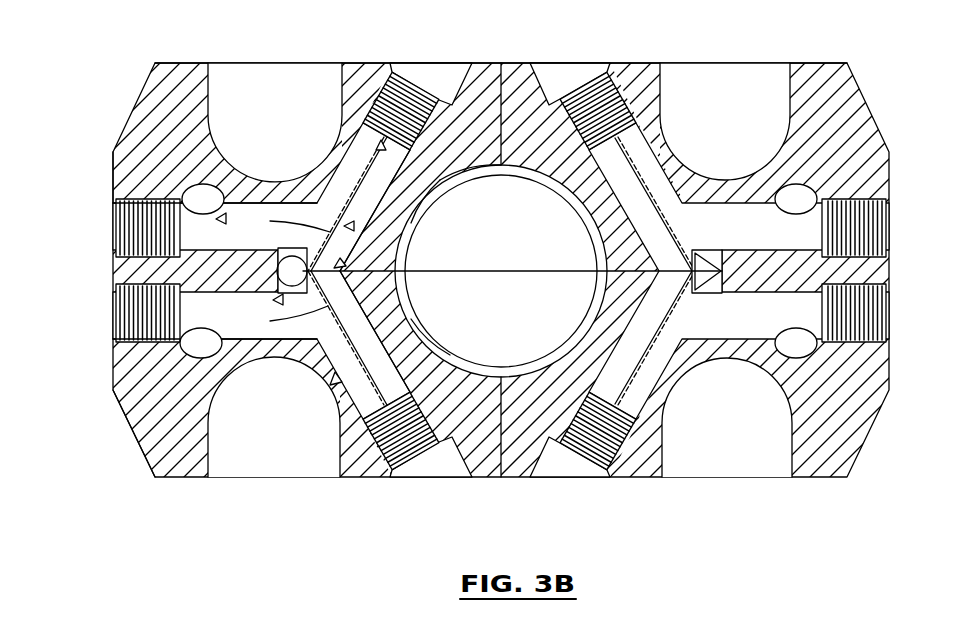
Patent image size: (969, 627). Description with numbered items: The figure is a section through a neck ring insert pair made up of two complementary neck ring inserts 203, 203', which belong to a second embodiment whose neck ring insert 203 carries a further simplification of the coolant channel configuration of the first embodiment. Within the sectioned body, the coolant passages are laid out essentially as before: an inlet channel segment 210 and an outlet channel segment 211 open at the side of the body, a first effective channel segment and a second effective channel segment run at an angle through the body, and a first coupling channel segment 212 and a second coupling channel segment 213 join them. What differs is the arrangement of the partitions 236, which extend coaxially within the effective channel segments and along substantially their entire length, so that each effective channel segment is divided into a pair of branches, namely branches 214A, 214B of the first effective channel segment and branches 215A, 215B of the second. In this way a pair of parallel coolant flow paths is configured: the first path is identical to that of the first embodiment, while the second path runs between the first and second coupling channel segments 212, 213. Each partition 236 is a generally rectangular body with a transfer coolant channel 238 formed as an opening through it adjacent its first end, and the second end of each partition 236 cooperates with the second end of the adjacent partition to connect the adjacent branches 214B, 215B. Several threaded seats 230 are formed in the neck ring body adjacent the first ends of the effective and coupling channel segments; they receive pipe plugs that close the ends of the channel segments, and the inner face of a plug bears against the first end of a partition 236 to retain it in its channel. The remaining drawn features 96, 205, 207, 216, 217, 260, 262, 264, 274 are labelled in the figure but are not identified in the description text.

The hydraulic body housing 96 is at (410, 252).
The neck ring insert 203 is at (261, 356).
The neck ring insert 203' is at (739, 352).
The valve body 205 is at (172, 452).
The lower recess 207 is at (294, 452).
The inlet channel segment 210 is at (196, 192).
The outlet channel segment 211 is at (193, 353).
The first coupling channel segment 212 is at (265, 213).
The second coupling channel segment 213 is at (250, 345).
The branch of first effective channel segment 214A is at (356, 153).
The branch of first effective channel segment 214B is at (380, 181).
The branch of second effective channel segment 215A is at (343, 360).
The branch of second effective channel segment 215B is at (416, 286).
The bore wall 216 is at (422, 226).
The upper threaded port 217 is at (170, 234).
The threaded seat 230 is at (135, 319).
The partition 236 is at (407, 312).
The transfer coolant channel 238 is at (437, 352).
The side face 260 is at (116, 181).
The top face 262 is at (366, 59).
The bottom port opening 264 is at (364, 489).
The center parting line 274 is at (511, 479).